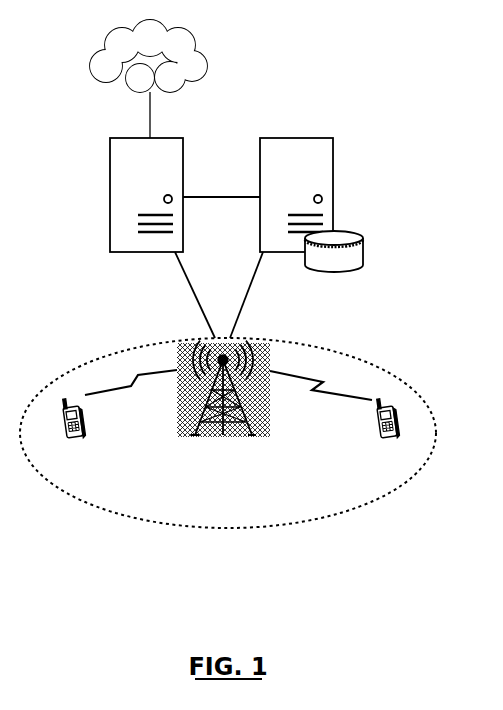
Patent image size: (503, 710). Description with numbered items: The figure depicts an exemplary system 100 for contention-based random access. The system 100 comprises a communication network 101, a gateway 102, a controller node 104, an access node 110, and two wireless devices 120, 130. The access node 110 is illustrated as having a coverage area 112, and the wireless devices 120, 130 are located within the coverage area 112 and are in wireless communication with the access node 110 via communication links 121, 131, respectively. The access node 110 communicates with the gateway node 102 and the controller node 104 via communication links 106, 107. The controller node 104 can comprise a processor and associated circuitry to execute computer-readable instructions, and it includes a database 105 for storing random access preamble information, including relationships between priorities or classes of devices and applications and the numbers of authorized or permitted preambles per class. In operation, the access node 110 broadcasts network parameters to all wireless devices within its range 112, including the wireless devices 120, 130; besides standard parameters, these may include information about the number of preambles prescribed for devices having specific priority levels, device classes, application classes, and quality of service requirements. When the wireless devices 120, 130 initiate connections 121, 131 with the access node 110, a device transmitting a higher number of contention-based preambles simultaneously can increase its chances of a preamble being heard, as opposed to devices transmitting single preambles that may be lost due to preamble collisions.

The system 100 is at (255, 52).
The communication network 101 is at (131, 68).
The gateway 102 is at (111, 194).
The controller node 104 is at (334, 190).
The database 105 is at (369, 242).
The communication link 106 is at (166, 295).
The communication link 107 is at (226, 292).
The access node 110 is at (247, 420).
The coverage area 112 is at (234, 434).
The wireless device 120 is at (357, 430).
The communication link 121 is at (321, 397).
The wireless device 130 is at (102, 432).
The communication link 131 is at (131, 396).